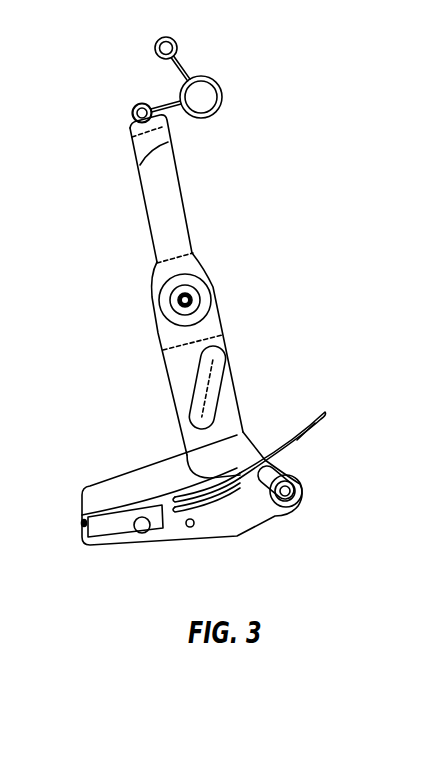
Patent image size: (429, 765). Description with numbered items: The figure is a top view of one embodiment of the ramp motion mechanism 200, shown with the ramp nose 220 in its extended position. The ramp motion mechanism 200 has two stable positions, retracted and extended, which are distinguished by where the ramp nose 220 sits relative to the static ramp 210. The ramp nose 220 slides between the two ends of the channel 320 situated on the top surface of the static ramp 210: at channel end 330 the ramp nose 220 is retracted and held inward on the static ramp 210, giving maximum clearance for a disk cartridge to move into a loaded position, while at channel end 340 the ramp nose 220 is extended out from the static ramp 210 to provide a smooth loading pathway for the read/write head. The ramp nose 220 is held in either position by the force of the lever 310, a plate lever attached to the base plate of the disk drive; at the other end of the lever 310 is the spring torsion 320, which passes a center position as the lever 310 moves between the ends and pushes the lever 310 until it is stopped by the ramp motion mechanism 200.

The ramp motion mechanism 200 is at (192, 515).
The static ramp 210 is at (152, 481).
The ramp nose 220 is at (318, 441).
The lever 310 is at (154, 296).
The spring torsion 320 is at (272, 542).
The channel end 330 is at (175, 525).
The channel end 340 is at (312, 473).